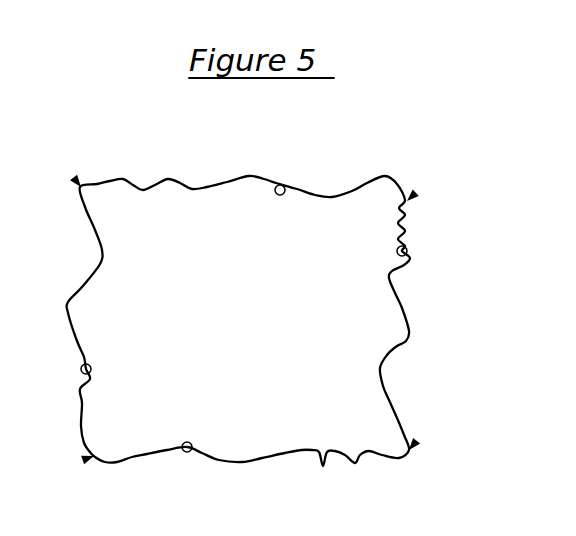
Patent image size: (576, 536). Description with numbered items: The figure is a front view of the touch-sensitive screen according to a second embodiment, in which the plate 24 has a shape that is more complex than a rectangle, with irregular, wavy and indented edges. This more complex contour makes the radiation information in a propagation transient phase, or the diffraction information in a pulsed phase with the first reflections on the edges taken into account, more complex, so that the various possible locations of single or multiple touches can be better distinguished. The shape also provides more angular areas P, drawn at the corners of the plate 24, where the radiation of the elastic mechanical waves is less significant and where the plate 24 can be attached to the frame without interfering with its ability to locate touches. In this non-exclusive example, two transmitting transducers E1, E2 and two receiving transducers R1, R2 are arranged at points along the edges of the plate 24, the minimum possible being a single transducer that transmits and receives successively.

The plate 24 is at (420, 362).
The angular areas P is at (73, 176).
The first transmitting transducer E1 is at (80, 362).
The second transmitting transducer E2 is at (274, 182).
The first receiving transducer R1 is at (184, 440).
The second receiving transducer R2 is at (397, 253).